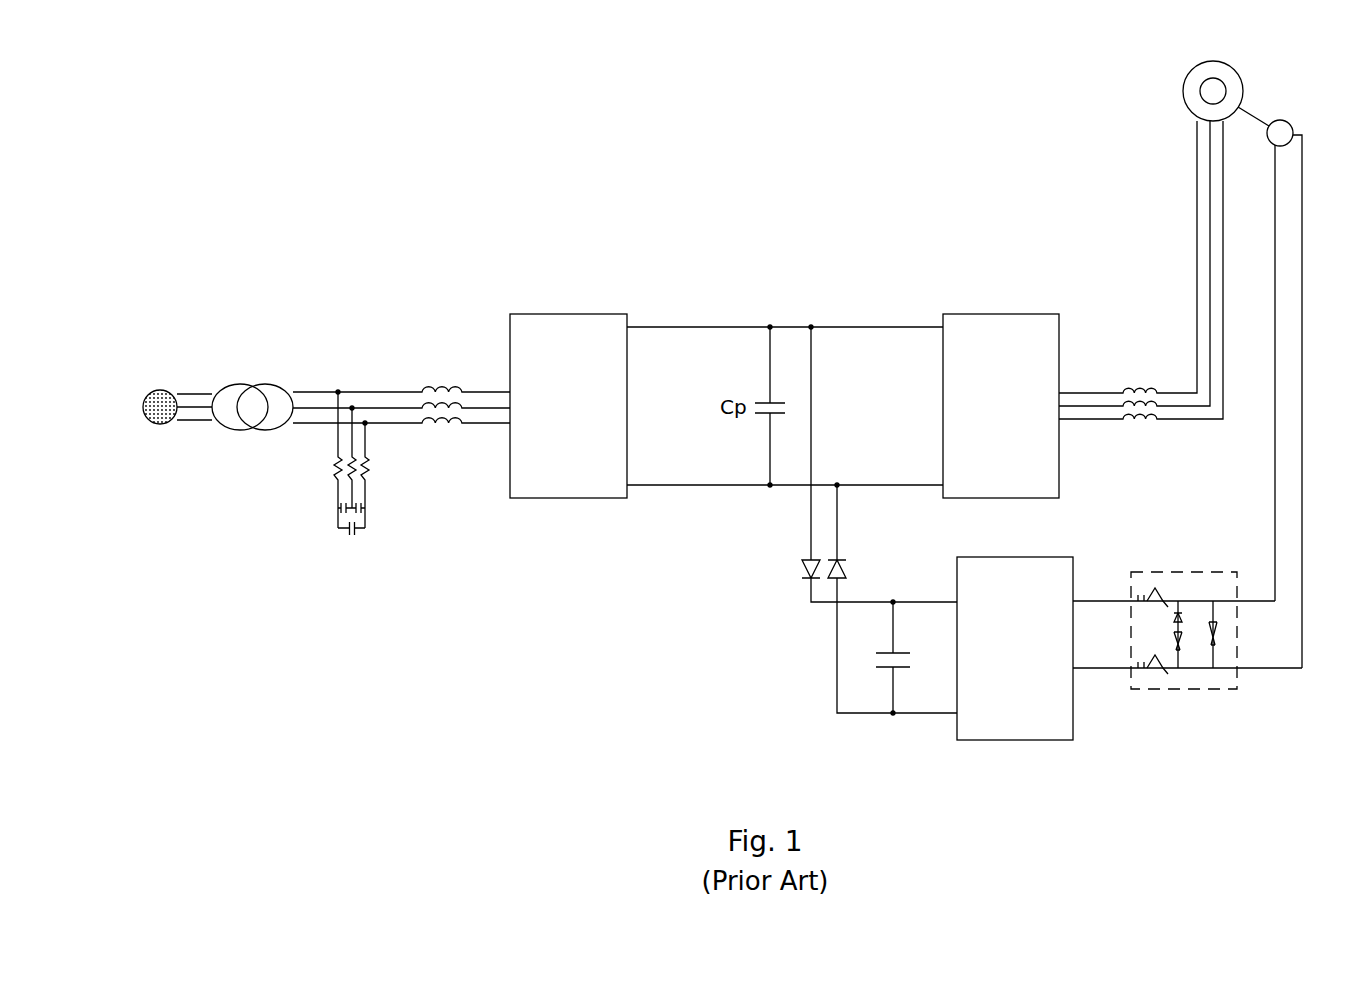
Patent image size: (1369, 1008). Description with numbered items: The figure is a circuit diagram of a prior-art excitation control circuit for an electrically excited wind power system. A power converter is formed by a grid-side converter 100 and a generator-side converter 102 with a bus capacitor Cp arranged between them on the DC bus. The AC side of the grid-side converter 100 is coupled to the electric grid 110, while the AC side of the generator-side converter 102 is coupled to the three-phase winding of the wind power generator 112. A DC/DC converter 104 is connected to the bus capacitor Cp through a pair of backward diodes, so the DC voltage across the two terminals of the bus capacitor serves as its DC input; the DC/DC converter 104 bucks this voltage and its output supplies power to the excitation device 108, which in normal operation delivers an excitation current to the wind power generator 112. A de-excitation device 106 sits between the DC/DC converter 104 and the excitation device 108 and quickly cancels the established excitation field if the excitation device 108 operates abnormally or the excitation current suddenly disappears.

The grid-side converter 100 is at (568, 313).
The generator-side converter 102 is at (1004, 313).
The DC/DC converter 104 is at (1010, 742).
The de-excitation device 106 is at (1185, 570).
The excitation device 108 is at (1288, 120).
The electric grid 110 is at (165, 386).
The wind power generator 112 is at (1187, 70).